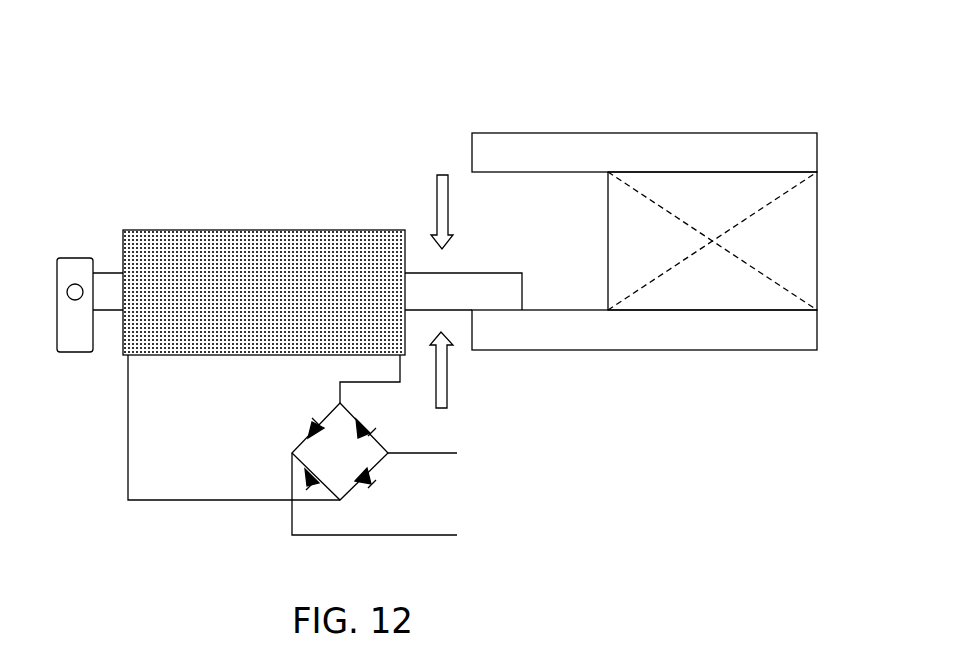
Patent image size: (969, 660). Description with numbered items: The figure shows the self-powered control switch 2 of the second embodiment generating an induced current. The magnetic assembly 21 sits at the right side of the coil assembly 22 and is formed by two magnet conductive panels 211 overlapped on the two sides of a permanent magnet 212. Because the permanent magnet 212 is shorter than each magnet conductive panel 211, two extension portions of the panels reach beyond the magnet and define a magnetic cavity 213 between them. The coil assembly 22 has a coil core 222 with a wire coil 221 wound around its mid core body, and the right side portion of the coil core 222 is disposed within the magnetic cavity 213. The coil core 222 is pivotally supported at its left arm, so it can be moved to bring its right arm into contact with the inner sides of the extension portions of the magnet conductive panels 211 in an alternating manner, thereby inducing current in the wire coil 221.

The self-powered control switch 2 is at (371, 117).
The magnetic assembly 21 is at (570, 130).
The magnet conductive panels 211 is at (675, 143).
The permanent magnet 212 is at (804, 207).
The magnetic cavity 213 is at (498, 204).
The coil assembly 22 is at (241, 218).
The wire coil 221 is at (353, 243).
The coil core 222 is at (434, 275).